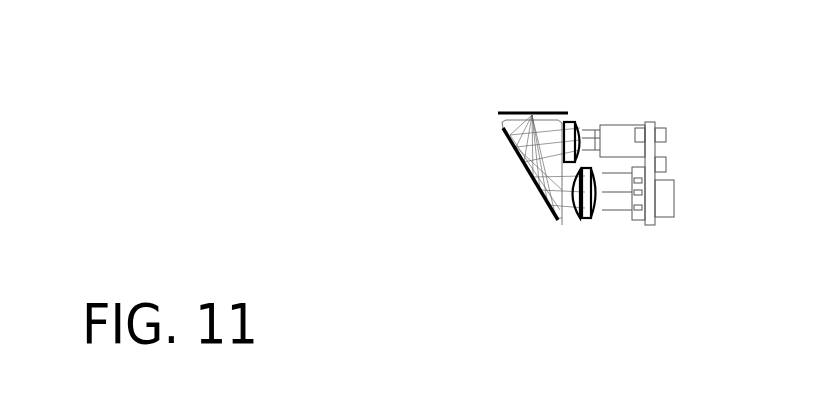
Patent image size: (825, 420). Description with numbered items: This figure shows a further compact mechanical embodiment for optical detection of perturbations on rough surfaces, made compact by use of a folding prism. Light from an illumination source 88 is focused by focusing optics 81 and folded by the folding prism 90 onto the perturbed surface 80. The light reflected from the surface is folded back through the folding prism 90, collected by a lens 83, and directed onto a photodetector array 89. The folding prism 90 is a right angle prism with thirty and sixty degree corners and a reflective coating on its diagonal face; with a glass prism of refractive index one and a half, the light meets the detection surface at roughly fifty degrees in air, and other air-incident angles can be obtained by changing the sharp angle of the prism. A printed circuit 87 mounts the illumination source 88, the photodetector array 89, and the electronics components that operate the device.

The perturbed surface 80 is at (520, 113).
The focusing optics 81 is at (573, 128).
The lens 83 is at (587, 217).
The printed circuit 87 is at (652, 152).
The illumination source 88 is at (625, 145).
The photodetector array 89 is at (637, 217).
The folding prism 90 is at (537, 190).